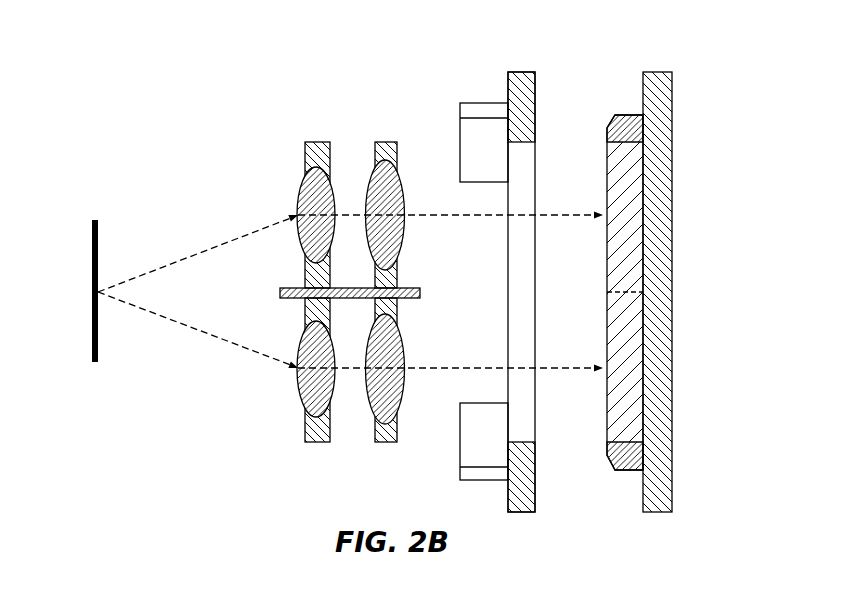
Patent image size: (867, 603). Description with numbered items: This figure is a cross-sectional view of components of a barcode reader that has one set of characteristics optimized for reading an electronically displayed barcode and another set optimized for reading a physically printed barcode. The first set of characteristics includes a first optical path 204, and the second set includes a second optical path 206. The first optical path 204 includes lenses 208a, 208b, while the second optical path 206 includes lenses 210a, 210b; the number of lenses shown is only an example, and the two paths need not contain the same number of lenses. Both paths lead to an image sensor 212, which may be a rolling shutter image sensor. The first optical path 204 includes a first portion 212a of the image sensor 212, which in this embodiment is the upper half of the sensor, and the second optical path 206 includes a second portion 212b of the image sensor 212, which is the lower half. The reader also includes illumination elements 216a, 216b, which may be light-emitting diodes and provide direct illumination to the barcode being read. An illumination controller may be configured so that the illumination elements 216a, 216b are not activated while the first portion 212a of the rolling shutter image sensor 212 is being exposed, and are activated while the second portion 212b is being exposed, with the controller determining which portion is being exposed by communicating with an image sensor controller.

The first optical path 204 is at (438, 217).
The second optical path 206 is at (432, 368).
The lens 208a is at (297, 190).
The lens 208b is at (370, 182).
The lens 210a is at (300, 396).
The lens 210b is at (372, 407).
The image sensor 212 is at (657, 257).
The first portion of the image sensor 212a is at (627, 173).
The second portion of the image sensor 212b is at (627, 365).
The illumination element 216a is at (477, 137).
The illumination element 216b is at (467, 447).